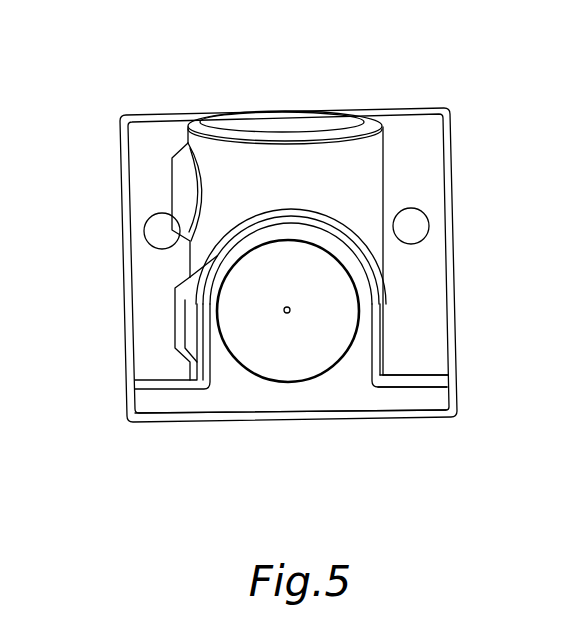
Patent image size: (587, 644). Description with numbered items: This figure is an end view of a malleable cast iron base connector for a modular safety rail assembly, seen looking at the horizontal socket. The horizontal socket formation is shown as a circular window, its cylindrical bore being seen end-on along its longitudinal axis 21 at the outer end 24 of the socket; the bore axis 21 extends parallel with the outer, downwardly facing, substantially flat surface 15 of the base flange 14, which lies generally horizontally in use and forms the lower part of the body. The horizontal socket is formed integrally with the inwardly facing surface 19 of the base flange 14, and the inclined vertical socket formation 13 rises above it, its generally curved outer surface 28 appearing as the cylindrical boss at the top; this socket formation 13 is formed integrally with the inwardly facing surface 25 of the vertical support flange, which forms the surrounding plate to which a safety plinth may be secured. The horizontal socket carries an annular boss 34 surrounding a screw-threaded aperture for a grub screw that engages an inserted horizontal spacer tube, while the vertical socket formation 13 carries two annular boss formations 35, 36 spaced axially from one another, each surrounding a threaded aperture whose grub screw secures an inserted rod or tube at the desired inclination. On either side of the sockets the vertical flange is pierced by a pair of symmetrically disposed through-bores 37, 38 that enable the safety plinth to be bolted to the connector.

The socket formation 13 is at (323, 120).
The first flange formation 14 is at (414, 398).
The substantially flat surface 15 is at (182, 422).
The inwardly facing surface 19 is at (432, 377).
The longitudinal axis 21 is at (287, 316).
The outer end 24 is at (357, 362).
The inwardly facing surface 25 is at (410, 135).
The curved outer surface 28 is at (252, 165).
The annular boss 34 is at (208, 312).
The annular boss formation 35 is at (178, 188).
The annular boss formation 36 is at (180, 343).
The through-bore 37 is at (157, 233).
The through-bore 38 is at (412, 228).